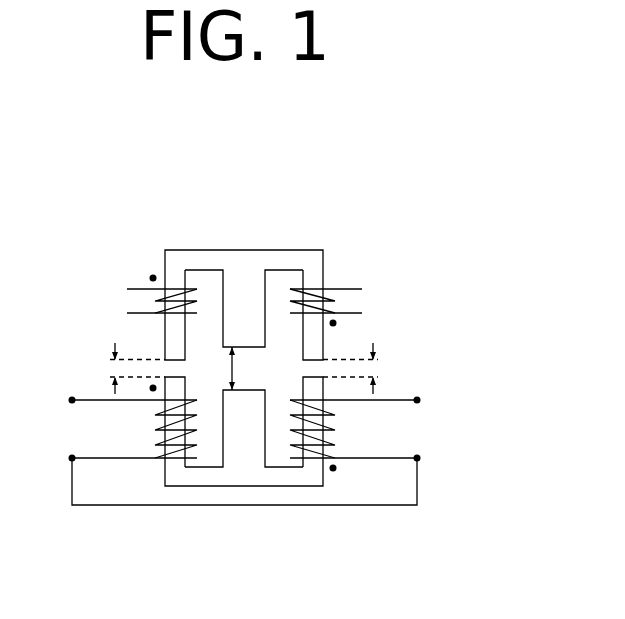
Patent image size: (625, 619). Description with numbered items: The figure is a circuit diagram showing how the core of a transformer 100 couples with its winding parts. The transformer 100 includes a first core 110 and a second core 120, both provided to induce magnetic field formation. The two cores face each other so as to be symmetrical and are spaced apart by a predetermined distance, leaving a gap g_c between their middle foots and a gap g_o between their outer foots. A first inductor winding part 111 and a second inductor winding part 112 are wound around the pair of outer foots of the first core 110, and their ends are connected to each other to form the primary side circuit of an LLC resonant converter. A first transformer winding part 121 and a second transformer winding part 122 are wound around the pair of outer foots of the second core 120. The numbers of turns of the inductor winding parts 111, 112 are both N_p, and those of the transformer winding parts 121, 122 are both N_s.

The transformer 100 is at (260, 149).
The first core 110 is at (243, 468).
The first inductor winding part 111 is at (177, 452).
The second inductor winding part 112 is at (305, 455).
The second core 120 is at (272, 258).
The first transformer winding part 121 is at (178, 284).
The second transformer winding part 122 is at (313, 293).